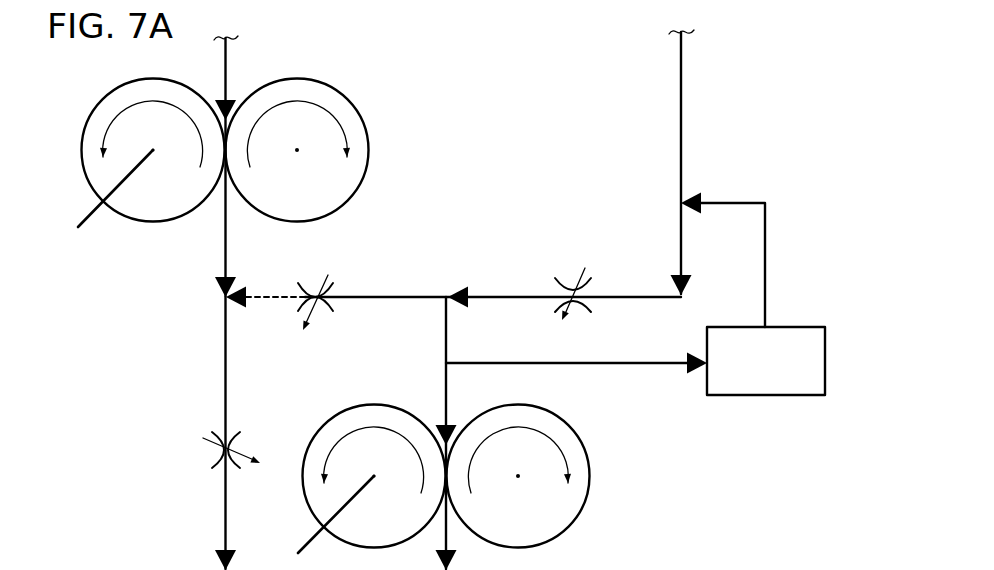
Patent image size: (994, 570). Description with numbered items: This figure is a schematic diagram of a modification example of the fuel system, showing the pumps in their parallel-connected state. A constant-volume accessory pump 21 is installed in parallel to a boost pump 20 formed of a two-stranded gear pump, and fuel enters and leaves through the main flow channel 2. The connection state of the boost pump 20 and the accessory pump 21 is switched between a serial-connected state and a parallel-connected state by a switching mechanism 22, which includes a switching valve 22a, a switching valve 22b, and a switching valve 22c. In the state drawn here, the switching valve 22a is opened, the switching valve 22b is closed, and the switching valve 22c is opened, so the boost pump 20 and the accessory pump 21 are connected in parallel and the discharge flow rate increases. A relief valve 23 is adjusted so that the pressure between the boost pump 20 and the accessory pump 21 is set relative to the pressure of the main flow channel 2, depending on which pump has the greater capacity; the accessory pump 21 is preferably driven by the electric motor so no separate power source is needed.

The main flow channel 2 is at (227, 57).
The boost pump 20 is at (368, 98).
The accessory pump 21 is at (592, 530).
The switching mechanism 22 is at (183, 309).
The switching valve 22a is at (543, 279).
The switching valve 22b is at (352, 281).
The switching valve 22c is at (196, 478).
The relief valve 23 is at (787, 397).